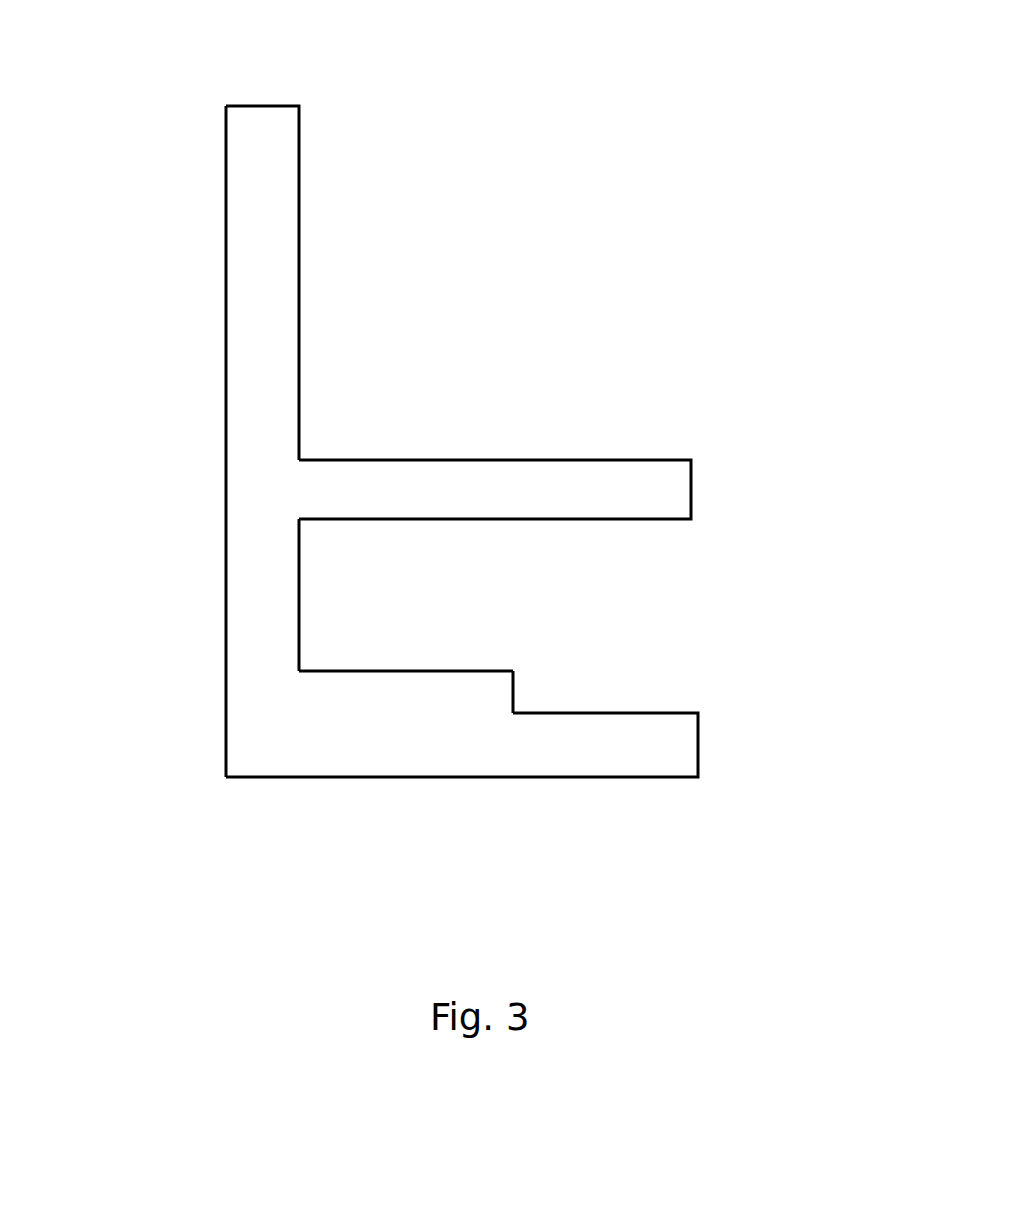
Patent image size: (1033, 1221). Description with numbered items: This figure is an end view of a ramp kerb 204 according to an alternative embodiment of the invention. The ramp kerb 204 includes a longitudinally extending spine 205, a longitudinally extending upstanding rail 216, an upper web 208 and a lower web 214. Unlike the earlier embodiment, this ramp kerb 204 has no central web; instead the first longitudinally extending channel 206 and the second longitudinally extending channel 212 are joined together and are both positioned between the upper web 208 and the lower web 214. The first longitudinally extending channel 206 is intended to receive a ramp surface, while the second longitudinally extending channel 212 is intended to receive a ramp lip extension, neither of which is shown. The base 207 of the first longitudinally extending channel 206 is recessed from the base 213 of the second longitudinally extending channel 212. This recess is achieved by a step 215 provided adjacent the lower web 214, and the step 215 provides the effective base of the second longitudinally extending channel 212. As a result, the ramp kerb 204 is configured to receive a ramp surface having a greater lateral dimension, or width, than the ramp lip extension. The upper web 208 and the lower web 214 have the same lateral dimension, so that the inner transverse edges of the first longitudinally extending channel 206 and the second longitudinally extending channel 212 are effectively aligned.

The ramp kerb 204 is at (526, 216).
The longitudinally extending upstanding rail 216 is at (234, 298).
The upper web 208 is at (402, 493).
The first longitudinally extending channel 206 is at (454, 576).
The base of the first longitudinally extending channel 207 is at (297, 546).
The longitudinally extending spine 205 is at (226, 618).
The base of the second longitudinally extending channel 213 is at (513, 688).
The second longitudinally extending channel 212 is at (652, 686).
The step 215 is at (407, 692).
The lower web 214 is at (610, 760).